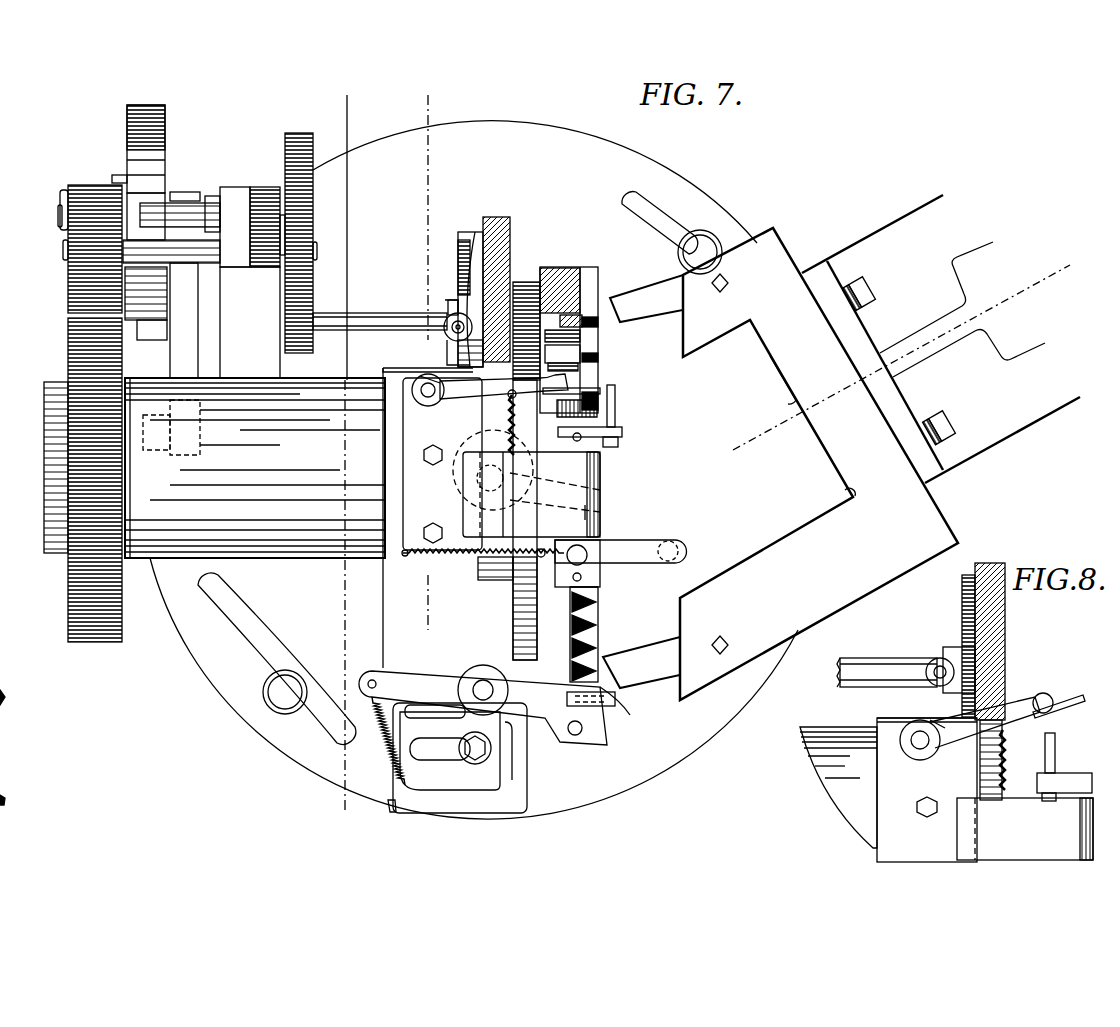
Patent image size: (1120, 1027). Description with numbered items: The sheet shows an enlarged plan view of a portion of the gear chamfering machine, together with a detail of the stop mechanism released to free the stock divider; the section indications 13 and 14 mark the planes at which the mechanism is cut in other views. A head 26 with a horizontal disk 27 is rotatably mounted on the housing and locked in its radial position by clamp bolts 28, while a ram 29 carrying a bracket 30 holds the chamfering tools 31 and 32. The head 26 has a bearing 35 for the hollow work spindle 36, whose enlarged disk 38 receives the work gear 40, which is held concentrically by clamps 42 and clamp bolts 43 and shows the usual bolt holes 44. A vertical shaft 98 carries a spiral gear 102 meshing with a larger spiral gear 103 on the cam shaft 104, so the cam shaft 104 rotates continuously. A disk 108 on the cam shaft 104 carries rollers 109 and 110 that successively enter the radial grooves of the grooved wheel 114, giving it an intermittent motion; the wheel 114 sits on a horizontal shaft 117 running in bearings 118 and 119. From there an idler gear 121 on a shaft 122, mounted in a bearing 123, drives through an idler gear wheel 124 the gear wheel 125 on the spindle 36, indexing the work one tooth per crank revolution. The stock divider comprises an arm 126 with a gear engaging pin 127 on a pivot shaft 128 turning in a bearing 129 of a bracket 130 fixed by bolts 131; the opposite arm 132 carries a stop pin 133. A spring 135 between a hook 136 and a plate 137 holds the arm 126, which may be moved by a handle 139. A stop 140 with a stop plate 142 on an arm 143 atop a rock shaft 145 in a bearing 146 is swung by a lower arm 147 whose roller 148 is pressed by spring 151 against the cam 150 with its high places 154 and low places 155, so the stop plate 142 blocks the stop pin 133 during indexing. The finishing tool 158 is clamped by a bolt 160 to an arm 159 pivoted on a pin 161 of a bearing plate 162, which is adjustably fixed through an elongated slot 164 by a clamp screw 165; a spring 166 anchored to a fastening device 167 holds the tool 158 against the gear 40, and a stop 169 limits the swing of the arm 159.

In FIG. 7, the section line 13 is at (347, 98).
In FIG. 7, the section line 14 is at (428, 97).
In FIG. 7, the head 26 is at (383, 616).
In FIG. 7, the horizontal disk 27 is at (212, 707).
In FIG. 7, the clamp bolts 28 is at (712, 240).
In FIG. 7, the ram 29 is at (895, 226).
In FIG. 7, the bracket 30 is at (945, 504).
In FIG. 7, the chamfering tool 31 is at (645, 298).
In FIG. 7, the chamfering tool 32 is at (645, 660).
In FIG. 7, the bearing 35 is at (138, 562).
In FIG. 8, the bearing 35 is at (848, 822).
In FIG. 7, the work spindle 36 is at (125, 570).
In FIG. 7, the disk 38 is at (528, 283).
In FIG. 7, the gear 40 is at (570, 268).
In FIG. 7, the clamps 42 is at (600, 345).
In FIG. 7, the clamp bolts 43 is at (590, 358).
In FIG. 7, the bolt holes 44 is at (600, 325).
In FIG. 7, the vertical shaft 98 is at (604, 482).
In FIG. 7, the spiral gear 102 is at (604, 502).
In FIG. 7, the spiral gear 103 is at (500, 220).
In FIG. 7, the cam shaft 104 is at (141, 330).
In FIG. 8, the cam shaft 104 is at (862, 665).
In FIG. 7, the disk 108 is at (192, 200).
In FIG. 7, the roller 109 is at (172, 192).
In FIG. 7, the roller 110 is at (152, 448).
In FIG. 7, the grooved wheel 114 is at (152, 114).
In FIG. 7, the horizontal shaft 117 is at (59, 213).
In FIG. 7, the bearing 118 is at (262, 188).
In FIG. 7, the bearing 119 is at (84, 185).
In FIG. 7, the idler gear 121 is at (305, 172).
In FIG. 7, the shaft 122 is at (63, 252).
In FIG. 7, the bearing 123 is at (240, 232).
In FIG. 7, the idler gear wheel 124 is at (75, 275).
In FIG. 7, the gear wheel 125 is at (72, 355).
In FIG. 7, the arm 126 is at (604, 557).
In FIG. 7, the gear engaging pin 127 is at (672, 541).
In FIG. 7, the pivot shaft 128 is at (596, 600).
In FIG. 7, the bearing 129 is at (415, 445).
In FIG. 8, the bearing 129 is at (1072, 847).
In FIG. 7, the bracket 130 is at (466, 497).
In FIG. 8, the bracket 130 is at (1005, 565).
In FIG. 7, the bolts 131 is at (433, 447).
In FIG. 7, the arm 132 is at (615, 438).
In FIG. 8, the arm 132 is at (1068, 772).
In FIG. 7, the stop pin 133 is at (616, 412).
In FIG. 8, the stop pin 133 is at (1057, 748).
In FIG. 7, the spring 135 is at (540, 560).
In FIG. 7, the hook 136 is at (520, 623).
In FIG. 7, the plate 137 is at (403, 555).
In FIG. 7, the handle 139 is at (592, 578).
In FIG. 7, the stop 140 is at (542, 385).
In FIG. 8, the stop 140 is at (1052, 693).
In FIG. 7, the stop plate 142 is at (600, 391).
In FIG. 8, the stop plate 142 is at (1083, 696).
In FIG. 7, the arm 143 is at (465, 389).
In FIG. 8, the arm 143 is at (1020, 700).
In FIG. 7, the rock shaft 145 is at (421, 384).
In FIG. 8, the rock shaft 145 is at (905, 738).
In FIG. 7, the bearing 146 is at (386, 372).
In FIG. 8, the bearing 146 is at (876, 722).
In FIG. 7, the arm 147 is at (392, 376).
In FIG. 8, the arm 147 is at (917, 697).
In FIG. 7, the roller 148 is at (452, 320).
In FIG. 8, the roller 148 is at (935, 660).
In FIG. 7, the cam 150 is at (470, 232).
In FIG. 8, the cam 150 is at (975, 593).
In FIG. 7, the spring 151 is at (512, 435).
In FIG. 8, the spring 151 is at (1005, 782).
In FIG. 7, the high places 154 is at (462, 245).
In FIG. 8, the high places 154 is at (962, 645).
In FIG. 7, the low places 155 is at (463, 310).
In FIG. 7, the finishing tool 158 is at (615, 705).
In FIG. 7, the arm 159 is at (415, 676).
In FIG. 7, the clamp bolt 160 is at (612, 752).
In FIG. 7, the pin 161 is at (485, 683).
In FIG. 7, the bearing plate 162 is at (440, 778).
In FIG. 7, the elongated slot 164 is at (428, 762).
In FIG. 7, the clamp screw 165 is at (478, 752).
In FIG. 7, the spring 166 is at (385, 790).
In FIG. 7, the fastening device 167 is at (392, 813).
In FIG. 7, the stop 169 is at (435, 712).